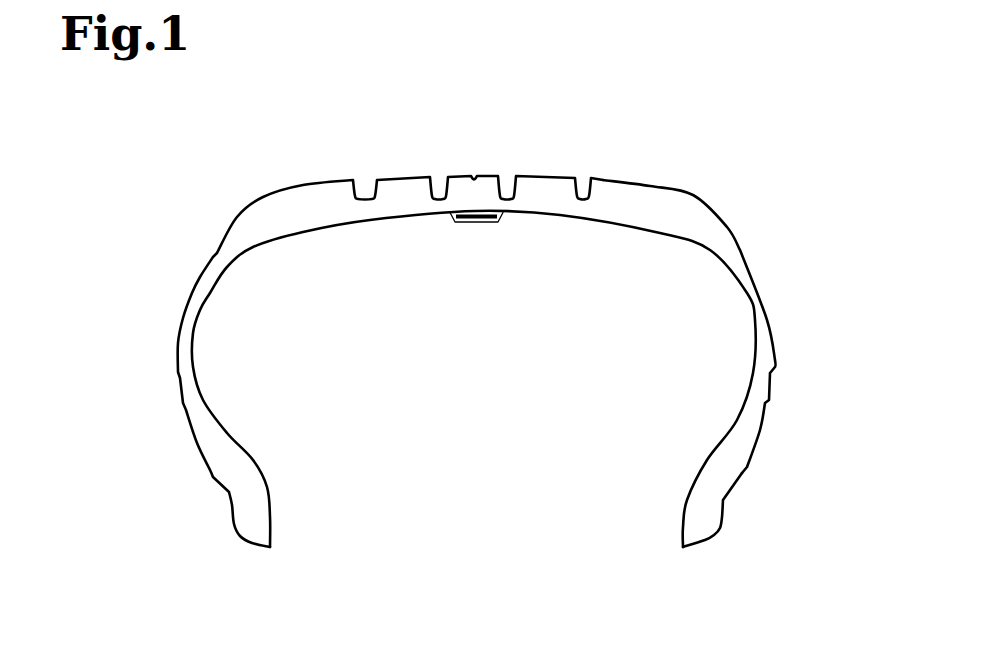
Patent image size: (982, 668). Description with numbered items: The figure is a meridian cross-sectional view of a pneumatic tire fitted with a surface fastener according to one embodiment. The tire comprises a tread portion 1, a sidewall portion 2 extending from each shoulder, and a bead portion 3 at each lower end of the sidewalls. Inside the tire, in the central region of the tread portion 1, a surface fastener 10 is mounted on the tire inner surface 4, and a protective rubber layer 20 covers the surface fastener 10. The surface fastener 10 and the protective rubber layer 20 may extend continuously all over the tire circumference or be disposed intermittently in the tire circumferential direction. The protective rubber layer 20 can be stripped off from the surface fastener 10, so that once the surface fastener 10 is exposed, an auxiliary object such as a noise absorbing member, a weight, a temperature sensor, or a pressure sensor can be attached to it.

The tread portion 1 is at (547, 173).
The sidewall portion 2 is at (763, 289).
The bead portion 3 is at (723, 520).
The tire inner surface 4 is at (377, 223).
The surface fastener 10 is at (467, 223).
The protective rubber layer 20 is at (498, 223).